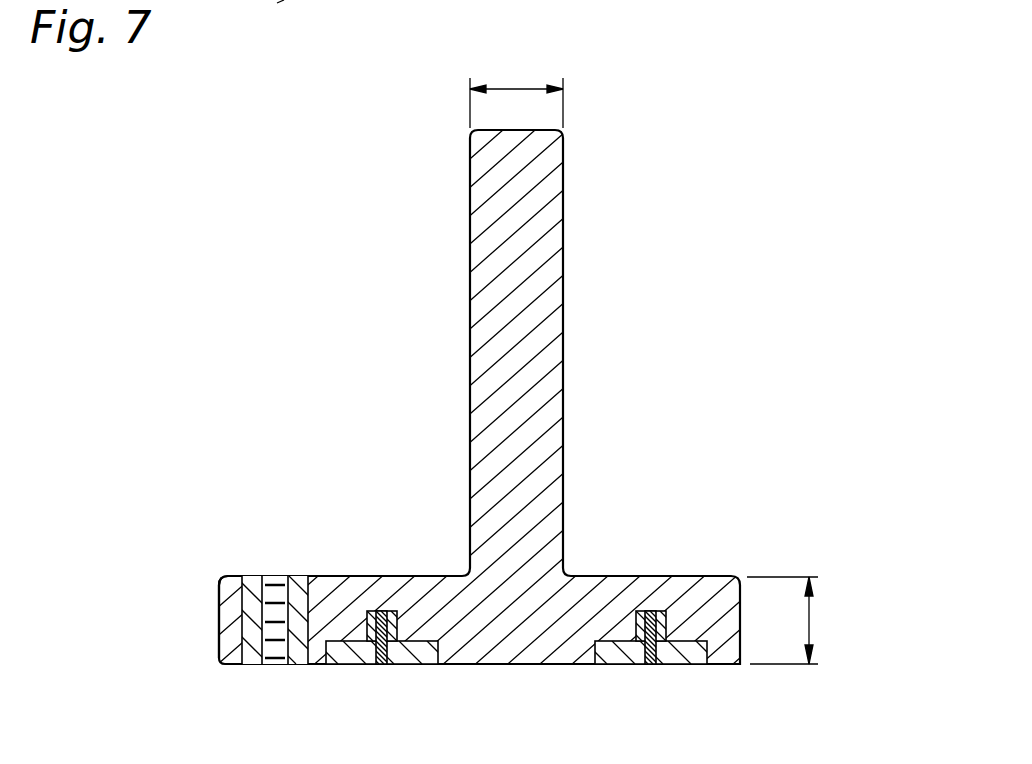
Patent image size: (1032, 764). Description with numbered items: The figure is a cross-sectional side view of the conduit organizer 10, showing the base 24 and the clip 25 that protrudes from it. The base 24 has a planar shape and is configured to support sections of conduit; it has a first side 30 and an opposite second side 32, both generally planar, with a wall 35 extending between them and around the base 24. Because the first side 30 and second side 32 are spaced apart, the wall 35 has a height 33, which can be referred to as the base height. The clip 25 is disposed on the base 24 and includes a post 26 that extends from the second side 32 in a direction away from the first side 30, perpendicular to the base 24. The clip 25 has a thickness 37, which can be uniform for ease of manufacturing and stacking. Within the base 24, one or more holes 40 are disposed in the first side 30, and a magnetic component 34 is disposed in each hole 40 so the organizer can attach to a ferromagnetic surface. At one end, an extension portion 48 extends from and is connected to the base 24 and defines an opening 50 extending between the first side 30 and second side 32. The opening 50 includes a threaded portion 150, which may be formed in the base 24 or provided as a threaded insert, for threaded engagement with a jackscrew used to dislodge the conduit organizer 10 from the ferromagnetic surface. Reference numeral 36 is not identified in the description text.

The conduit organizer 10 is at (738, 175).
The base 24 is at (643, 588).
The clip 25 is at (470, 158).
The post 26 is at (502, 385).
The first side 30 is at (725, 664).
The second side 32 is at (707, 575).
The height 33 is at (813, 617).
The magnetic component 34 is at (427, 657).
The wall 35 is at (218, 595).
The upright height 36 is at (267, 4).
The thickness 37 is at (527, 86).
The hole 40 is at (353, 662).
The extension portion 48 is at (218, 635).
The opening 50 is at (275, 582).
The threaded portion 150 is at (253, 655).